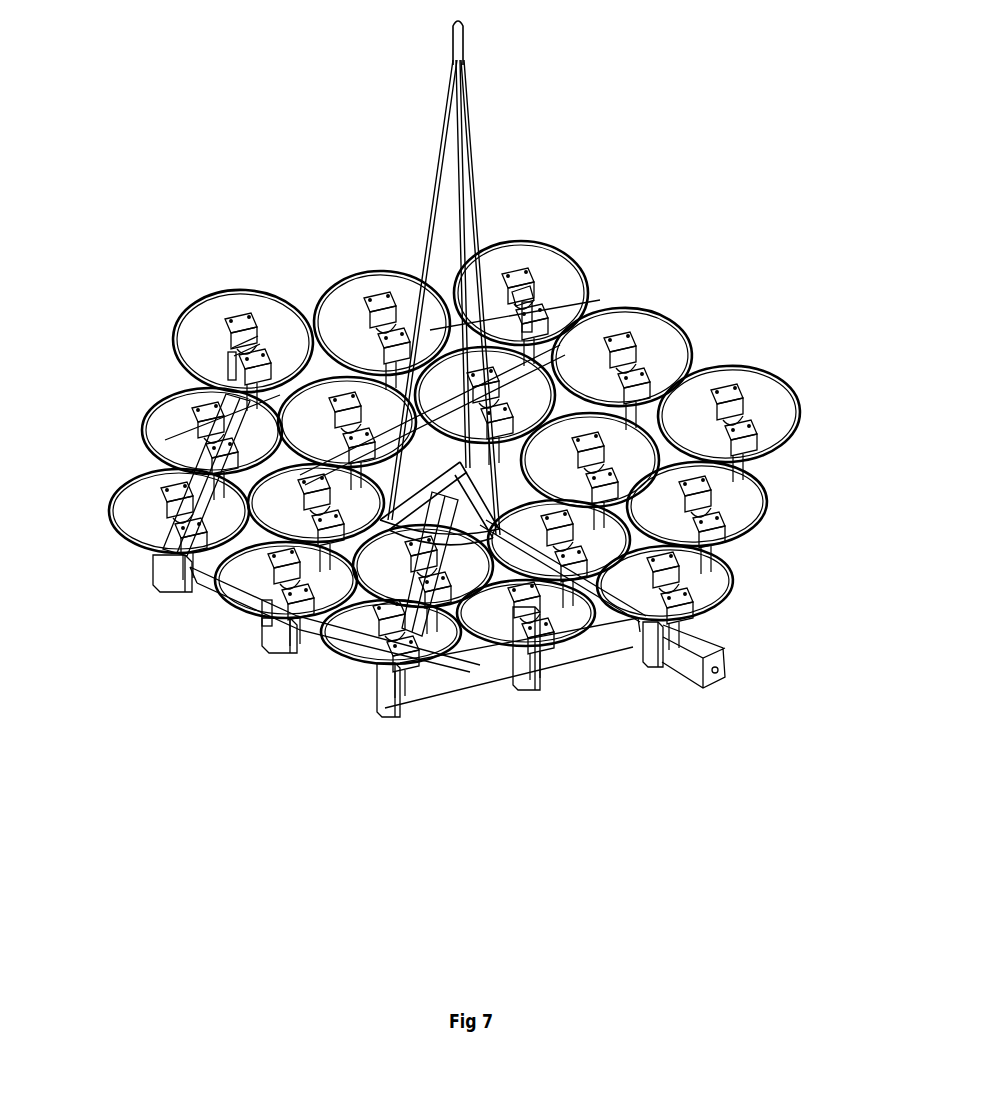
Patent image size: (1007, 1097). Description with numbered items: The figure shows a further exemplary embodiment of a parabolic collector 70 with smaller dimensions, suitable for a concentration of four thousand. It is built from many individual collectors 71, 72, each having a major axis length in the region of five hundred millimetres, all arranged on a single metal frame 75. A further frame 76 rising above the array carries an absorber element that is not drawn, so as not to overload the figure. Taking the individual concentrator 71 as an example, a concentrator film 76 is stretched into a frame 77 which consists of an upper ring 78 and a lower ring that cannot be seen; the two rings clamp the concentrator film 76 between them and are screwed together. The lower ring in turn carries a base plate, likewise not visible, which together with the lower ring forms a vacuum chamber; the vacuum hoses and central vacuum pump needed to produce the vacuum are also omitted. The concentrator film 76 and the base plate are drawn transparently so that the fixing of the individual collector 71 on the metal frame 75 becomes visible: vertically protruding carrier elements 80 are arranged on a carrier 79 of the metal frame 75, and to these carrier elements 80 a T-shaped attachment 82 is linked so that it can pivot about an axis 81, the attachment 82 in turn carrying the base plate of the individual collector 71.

The parabolic collector 70 is at (808, 116).
The individual collector 71 is at (797, 386).
The individual collector 72 is at (202, 267).
The metal frame 75 is at (578, 666).
The frame / concentrator film 76 is at (490, 82).
The frame 77 is at (677, 349).
The upper ring 78 is at (613, 236).
The carrier 79 is at (355, 337).
The carrier element 80 is at (398, 473).
The axis 81 is at (205, 618).
The T-shaped attachment 82 is at (384, 467).